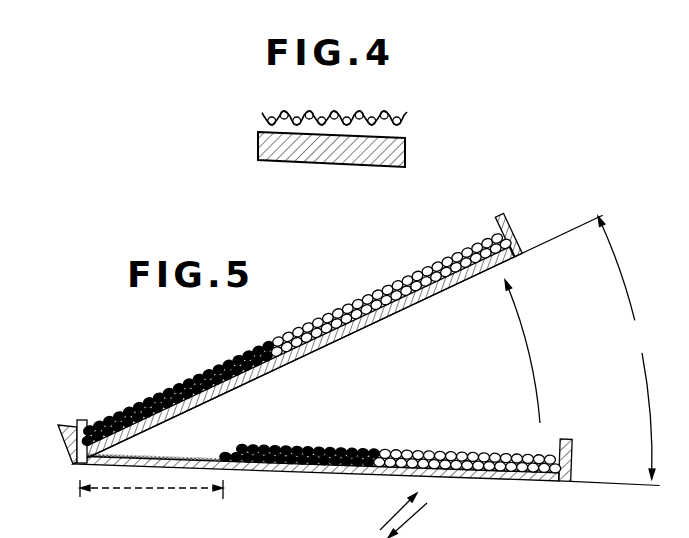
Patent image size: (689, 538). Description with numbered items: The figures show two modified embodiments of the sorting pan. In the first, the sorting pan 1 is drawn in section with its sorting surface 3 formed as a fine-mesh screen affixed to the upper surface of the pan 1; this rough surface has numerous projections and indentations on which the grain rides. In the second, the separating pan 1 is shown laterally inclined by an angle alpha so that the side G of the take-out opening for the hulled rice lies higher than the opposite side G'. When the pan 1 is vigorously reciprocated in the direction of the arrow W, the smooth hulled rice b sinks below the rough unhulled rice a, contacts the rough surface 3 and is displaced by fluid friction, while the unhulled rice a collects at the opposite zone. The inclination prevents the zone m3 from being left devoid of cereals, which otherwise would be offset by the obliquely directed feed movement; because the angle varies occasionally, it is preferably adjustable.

In FIG. 4, the separating pan 1 is at (356, 157).
In FIG. 5, the separating pan 1 is at (515, 477).
In FIG. 4, the rough surface 3 is at (372, 119).
In FIG. 5, the unhulled rice a is at (180, 390).
In FIG. 5, the hulled rice b is at (402, 282).
In FIG. 5, the side of the take-out opening for the hulled rice G is at (508, 226).
In FIG. 5, the opposite side G' is at (58, 439).
In FIG. 5, the direction of reciprocation W is at (412, 511).
In FIG. 5, the zone devoid of supplied cereals m3 is at (151, 490).